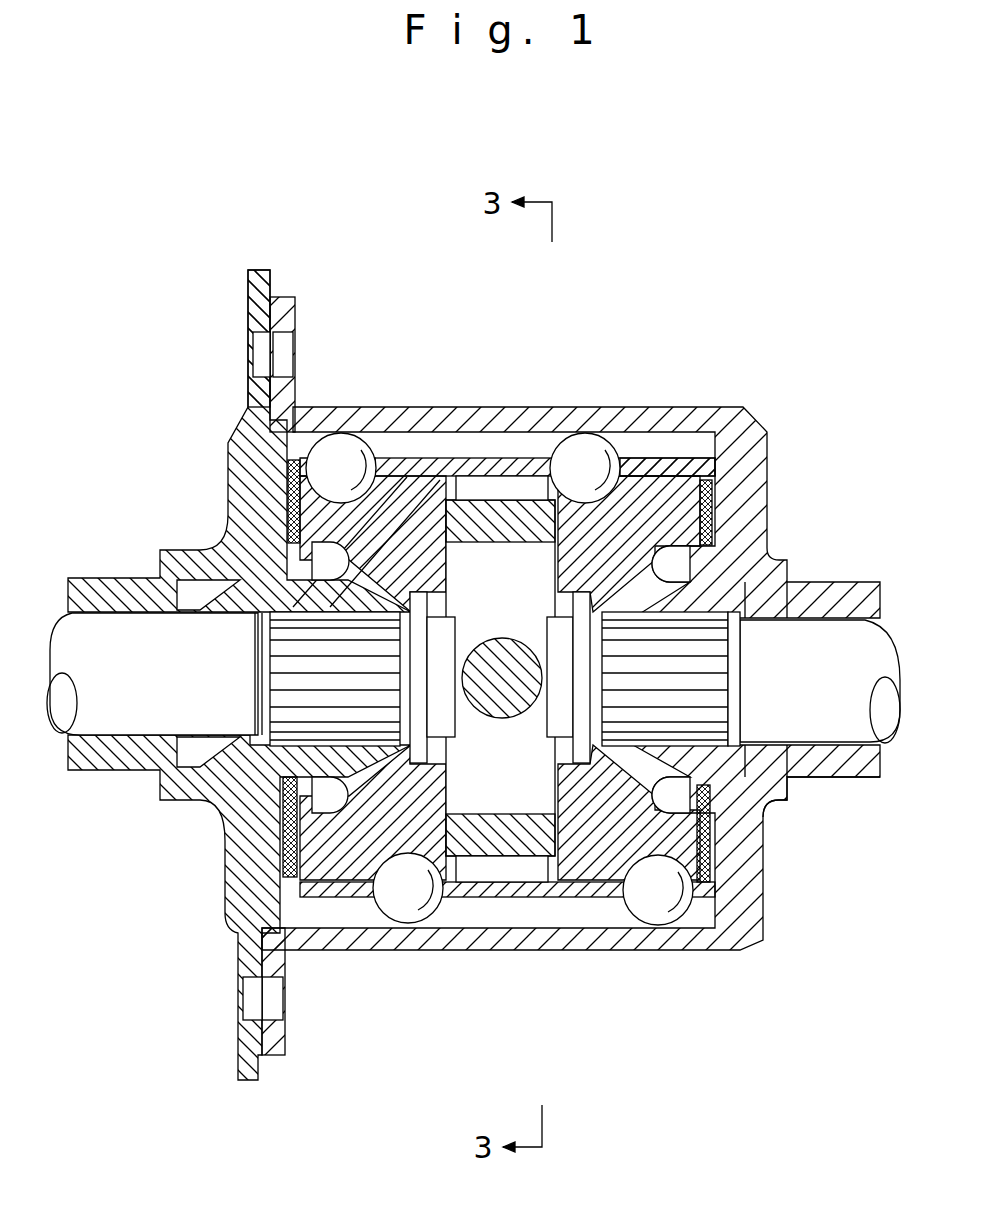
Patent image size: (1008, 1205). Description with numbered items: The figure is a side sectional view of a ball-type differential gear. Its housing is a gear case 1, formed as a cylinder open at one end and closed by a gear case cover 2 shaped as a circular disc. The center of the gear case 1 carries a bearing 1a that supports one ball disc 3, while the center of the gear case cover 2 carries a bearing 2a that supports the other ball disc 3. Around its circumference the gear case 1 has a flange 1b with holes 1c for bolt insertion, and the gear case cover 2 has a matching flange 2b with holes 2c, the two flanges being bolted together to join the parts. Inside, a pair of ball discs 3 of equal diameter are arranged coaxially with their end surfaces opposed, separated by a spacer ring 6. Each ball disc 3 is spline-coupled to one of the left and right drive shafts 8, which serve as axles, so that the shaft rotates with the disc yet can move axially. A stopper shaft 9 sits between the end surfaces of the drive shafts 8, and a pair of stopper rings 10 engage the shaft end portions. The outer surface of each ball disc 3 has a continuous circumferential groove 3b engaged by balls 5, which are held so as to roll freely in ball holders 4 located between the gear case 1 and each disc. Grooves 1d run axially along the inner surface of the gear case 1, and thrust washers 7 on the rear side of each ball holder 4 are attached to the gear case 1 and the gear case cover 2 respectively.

The gear case 1 is at (755, 407).
The bearing 1a is at (720, 777).
The flange 1b is at (295, 315).
The holes 1c is at (287, 362).
The grooves 1d is at (503, 453).
The gear case cover 2 is at (228, 458).
The bearing 2a is at (255, 772).
The flange 2b is at (248, 290).
The holes 2c is at (258, 362).
The ball discs 3 is at (423, 497).
The groove 3b is at (409, 407).
The ball holders 4 is at (630, 450).
The balls 5 is at (583, 455).
The spacer ring 6 is at (520, 852).
The thrust washers 7 is at (288, 505).
The drive shafts 8 is at (98, 640).
The stopper shaft 9 is at (515, 722).
The stopper rings 10 is at (410, 880).